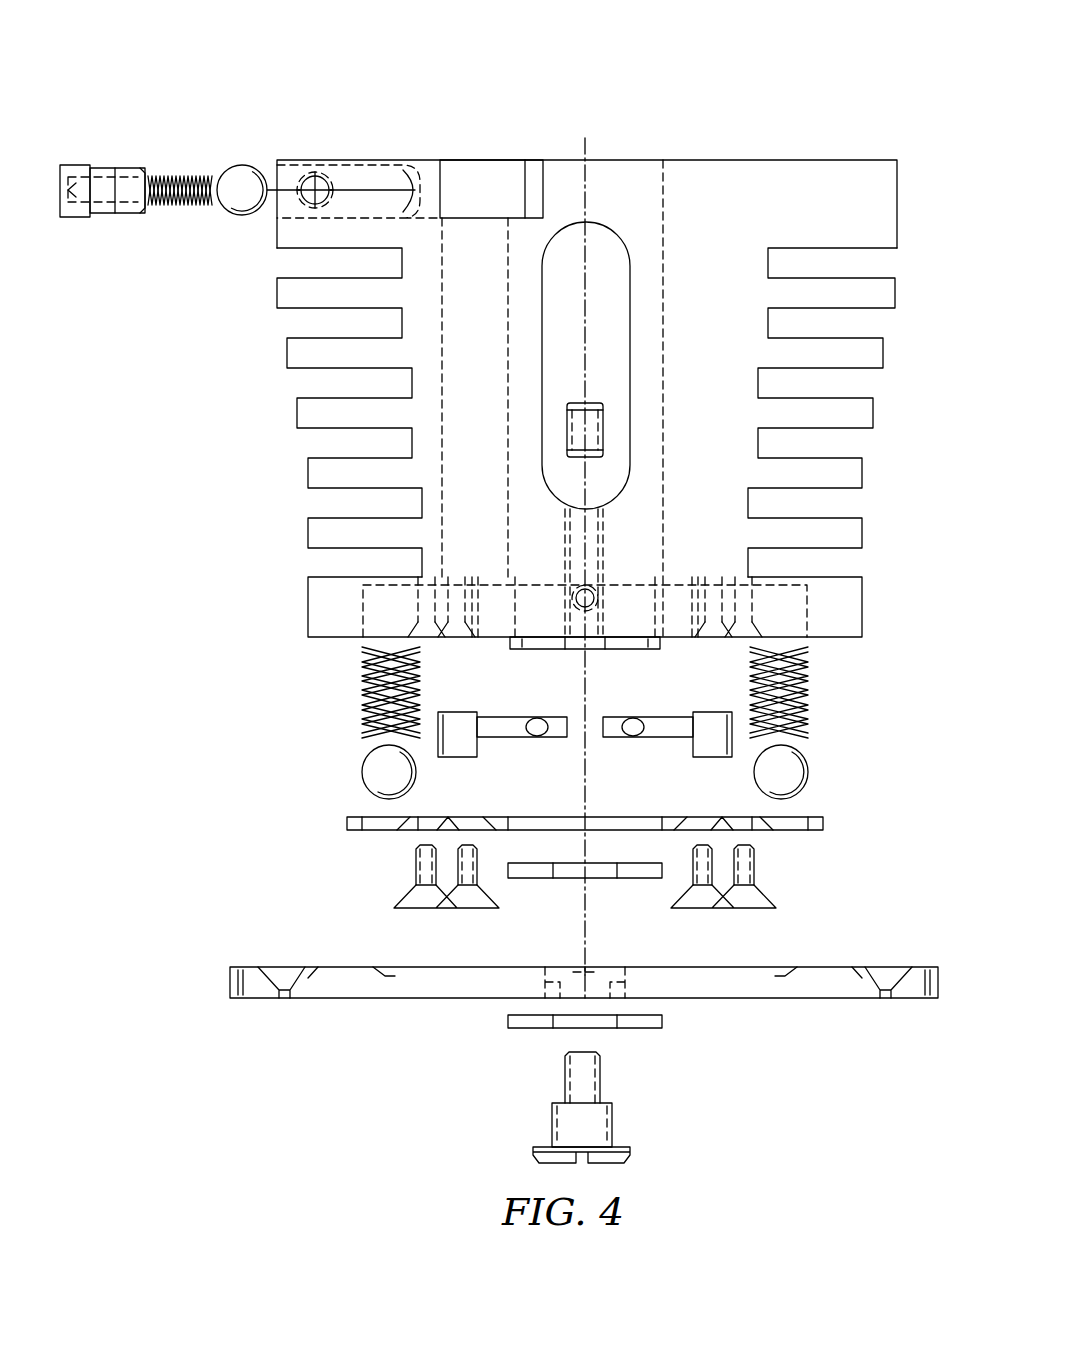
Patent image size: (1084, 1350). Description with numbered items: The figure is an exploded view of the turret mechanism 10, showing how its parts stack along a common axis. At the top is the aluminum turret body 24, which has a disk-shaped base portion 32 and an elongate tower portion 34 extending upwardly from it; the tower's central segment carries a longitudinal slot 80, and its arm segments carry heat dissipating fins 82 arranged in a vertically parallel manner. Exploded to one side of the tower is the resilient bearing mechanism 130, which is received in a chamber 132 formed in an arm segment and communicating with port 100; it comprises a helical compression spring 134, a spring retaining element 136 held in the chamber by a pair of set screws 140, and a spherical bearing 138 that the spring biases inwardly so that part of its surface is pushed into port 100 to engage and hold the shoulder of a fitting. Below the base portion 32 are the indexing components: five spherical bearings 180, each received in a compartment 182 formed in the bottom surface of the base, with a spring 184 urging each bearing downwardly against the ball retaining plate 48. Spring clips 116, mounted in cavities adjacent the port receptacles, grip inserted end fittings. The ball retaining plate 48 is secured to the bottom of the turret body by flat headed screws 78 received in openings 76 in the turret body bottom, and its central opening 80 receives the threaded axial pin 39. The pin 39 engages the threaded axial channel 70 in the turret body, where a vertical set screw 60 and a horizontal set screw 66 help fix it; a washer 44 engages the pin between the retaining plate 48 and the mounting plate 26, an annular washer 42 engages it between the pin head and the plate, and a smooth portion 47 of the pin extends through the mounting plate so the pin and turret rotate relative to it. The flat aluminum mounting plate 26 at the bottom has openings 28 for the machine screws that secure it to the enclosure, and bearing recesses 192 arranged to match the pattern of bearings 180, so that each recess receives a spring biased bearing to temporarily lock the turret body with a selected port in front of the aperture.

The turret mechanism 10 is at (216, 103).
The turret body 24 is at (822, 160).
The mounting plate 26 is at (230, 985).
The openings 28 is at (290, 1000).
The base portion 32 is at (308, 594).
The tower portion 34 is at (287, 340).
The threaded axial pin 39 is at (552, 1120).
The annular washer 42 is at (518, 1031).
The washer 44 is at (528, 888).
The smooth portion 47 is at (612, 1118).
The ball retaining plate 48 is at (822, 831).
The vertical set screw 60 is at (565, 437).
The horizontal set screw 66 is at (598, 592).
The threaded axial channel 70 is at (603, 527).
The openings 76 is at (462, 575).
The flat headed screws 78 is at (415, 866).
The longitudinal slot / central opening 80 is at (612, 322).
The heat dissipating fins 82 is at (307, 428).
The port 100 is at (508, 297).
The spring clips 116 is at (467, 750).
The resilient bearing mechanism 130 is at (184, 208).
The chamber 132 is at (340, 165).
The helical compression spring 134 is at (172, 176).
The spring retaining element 136 is at (117, 165).
The spherical bearing 138 is at (240, 165).
The set screws 140 is at (308, 205).
The spherical bearings 180 is at (365, 781).
The compartment 182 is at (363, 616).
The spring 184 is at (360, 696).
The bearing recesses 192 is at (373, 972).